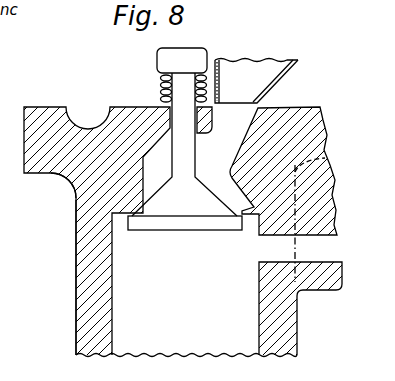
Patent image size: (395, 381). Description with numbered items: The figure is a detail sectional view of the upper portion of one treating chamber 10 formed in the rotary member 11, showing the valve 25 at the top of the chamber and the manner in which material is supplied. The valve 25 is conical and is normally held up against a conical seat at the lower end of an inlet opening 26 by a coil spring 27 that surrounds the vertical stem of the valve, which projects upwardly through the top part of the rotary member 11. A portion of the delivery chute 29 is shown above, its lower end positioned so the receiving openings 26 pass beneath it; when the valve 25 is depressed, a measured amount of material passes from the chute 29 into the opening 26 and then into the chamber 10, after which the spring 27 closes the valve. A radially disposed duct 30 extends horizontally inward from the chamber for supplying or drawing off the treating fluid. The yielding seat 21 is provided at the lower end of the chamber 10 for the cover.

The chamber 10 is at (133, 308).
The rotary member 11 is at (76, 252).
The yielding seat 21 is at (0, 329).
The valve 25 is at (177, 203).
The inlet opening 26 is at (214, 177).
The coil spring 27 is at (160, 87).
The delivery chute 29 is at (258, 73).
The radially disposed duct 30 is at (318, 250).